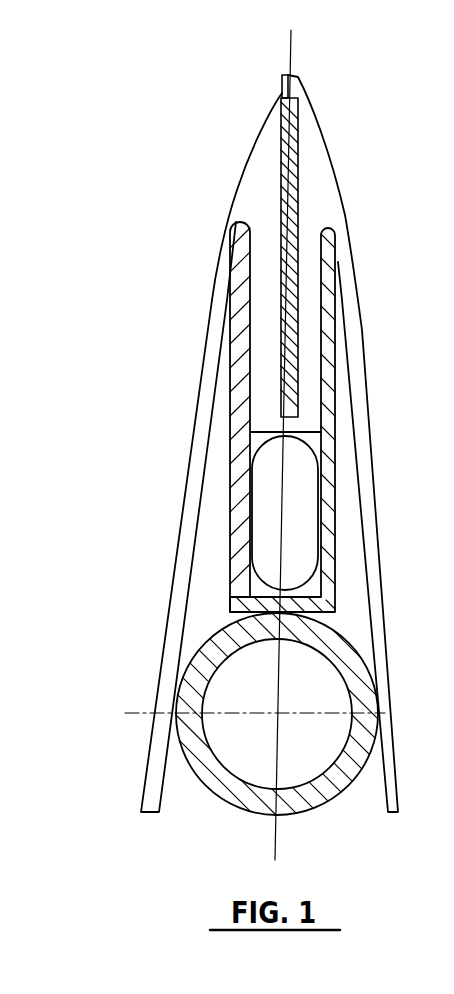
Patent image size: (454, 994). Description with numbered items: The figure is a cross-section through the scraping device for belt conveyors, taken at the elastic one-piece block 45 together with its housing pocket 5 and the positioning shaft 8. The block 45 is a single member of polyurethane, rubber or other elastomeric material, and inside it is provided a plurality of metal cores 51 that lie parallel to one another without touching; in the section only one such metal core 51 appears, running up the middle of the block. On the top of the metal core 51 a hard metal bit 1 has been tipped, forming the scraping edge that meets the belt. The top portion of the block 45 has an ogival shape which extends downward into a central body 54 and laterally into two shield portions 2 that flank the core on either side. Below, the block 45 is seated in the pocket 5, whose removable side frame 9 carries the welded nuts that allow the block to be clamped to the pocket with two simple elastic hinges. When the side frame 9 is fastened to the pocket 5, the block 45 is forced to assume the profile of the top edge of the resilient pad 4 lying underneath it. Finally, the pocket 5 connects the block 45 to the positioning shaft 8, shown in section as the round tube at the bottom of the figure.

The hard metal bit 1 is at (283, 88).
The shield portion 2 is at (212, 340).
The one-piece block 45 is at (265, 165).
The metal core 51 is at (300, 130).
The central body 54 is at (308, 313).
The pocket 5 is at (242, 448).
The resilient pad 4 is at (295, 492).
The removable side frame 9 is at (327, 548).
The positioning shaft 8 is at (205, 655).